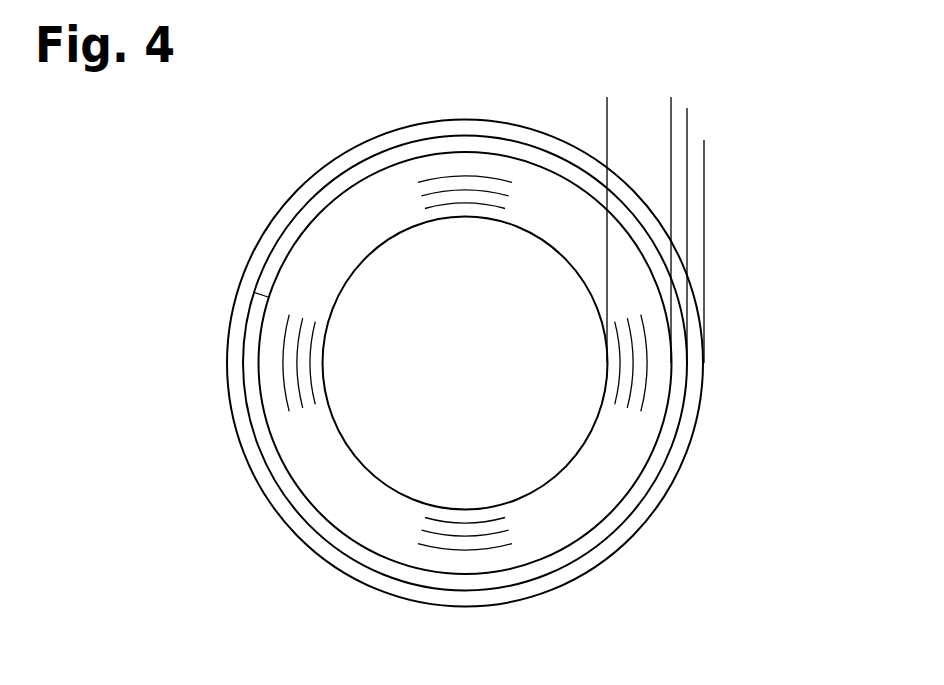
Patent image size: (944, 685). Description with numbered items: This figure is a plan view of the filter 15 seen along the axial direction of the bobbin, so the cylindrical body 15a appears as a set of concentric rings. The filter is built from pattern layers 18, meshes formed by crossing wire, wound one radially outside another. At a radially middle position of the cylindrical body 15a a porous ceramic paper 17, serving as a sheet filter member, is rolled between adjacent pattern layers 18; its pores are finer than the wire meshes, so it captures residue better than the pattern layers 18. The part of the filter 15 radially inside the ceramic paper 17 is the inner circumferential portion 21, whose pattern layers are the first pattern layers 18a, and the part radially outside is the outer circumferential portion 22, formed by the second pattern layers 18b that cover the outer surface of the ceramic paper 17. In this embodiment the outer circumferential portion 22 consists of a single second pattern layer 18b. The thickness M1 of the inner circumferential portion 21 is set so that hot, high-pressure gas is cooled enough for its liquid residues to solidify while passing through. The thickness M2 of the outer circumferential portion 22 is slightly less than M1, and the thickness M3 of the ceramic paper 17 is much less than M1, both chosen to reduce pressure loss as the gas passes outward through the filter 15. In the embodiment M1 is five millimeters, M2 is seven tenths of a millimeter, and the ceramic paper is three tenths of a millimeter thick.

The filter 15 is at (727, 311).
The cylindrical body 15a is at (703, 385).
The porous ceramic paper 17 is at (288, 487).
The pattern layers 18 is at (497, 397).
The first pattern layers 18a is at (443, 512).
The second pattern layers 18b is at (605, 548).
The inner circumferential portion 21 is at (382, 542).
The outer circumferential portion 22 is at (232, 372).
The thickness of the inner circumferential portion M1 is at (662, 111).
The thickness of the outer circumferential portion M2 is at (660, 149).
The thickness of the ceramic paper M3 is at (652, 127).